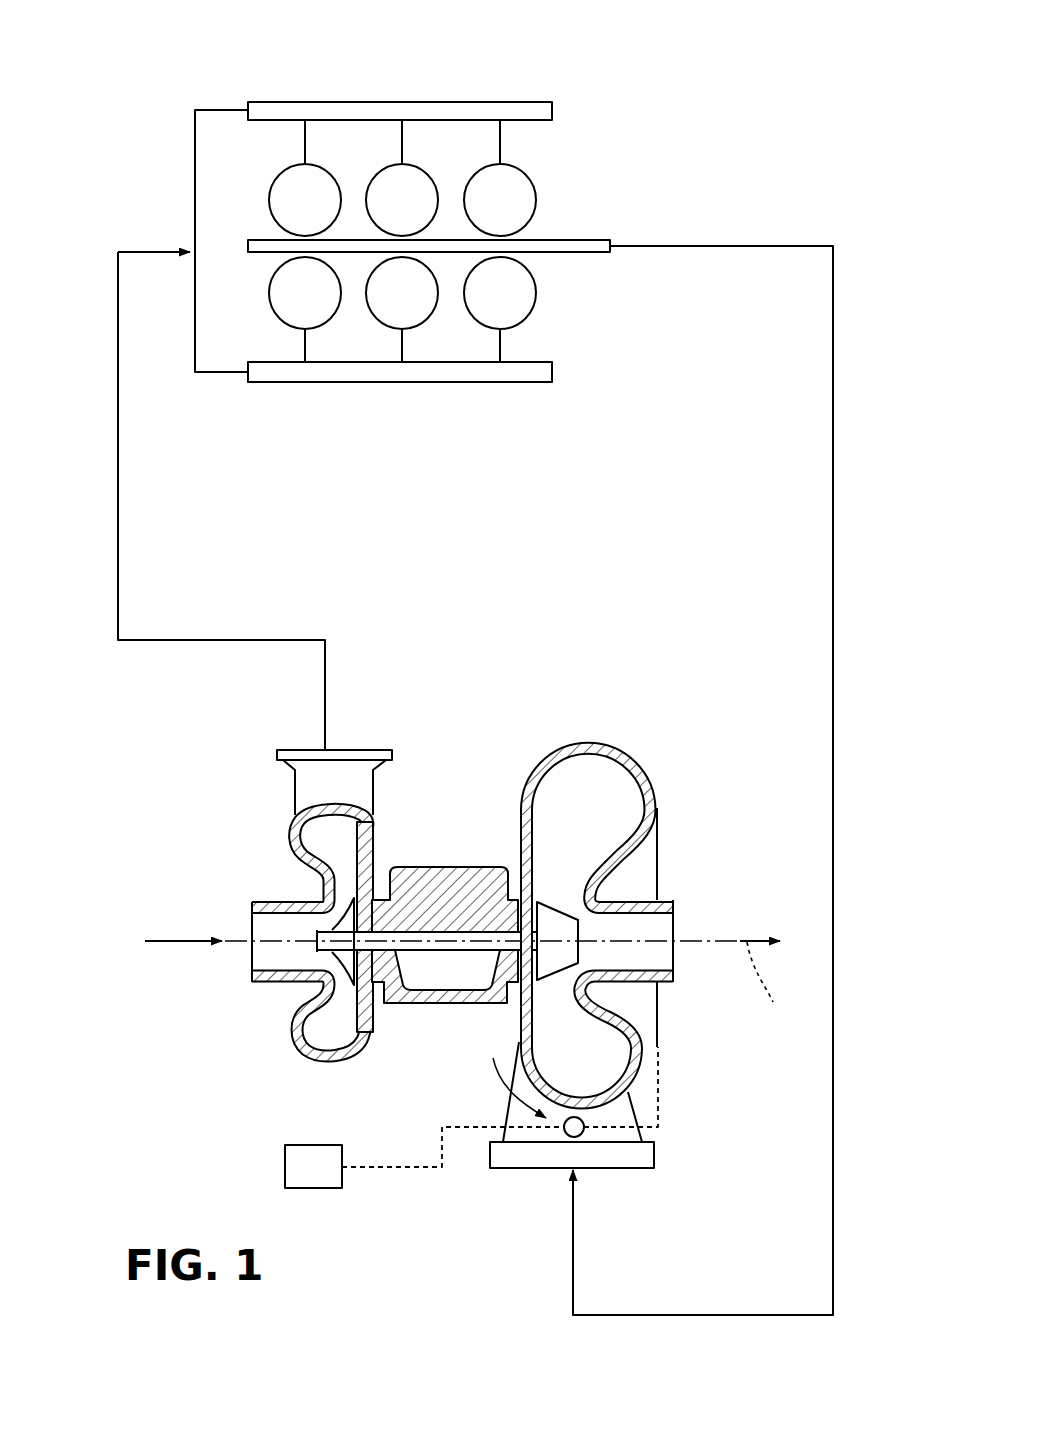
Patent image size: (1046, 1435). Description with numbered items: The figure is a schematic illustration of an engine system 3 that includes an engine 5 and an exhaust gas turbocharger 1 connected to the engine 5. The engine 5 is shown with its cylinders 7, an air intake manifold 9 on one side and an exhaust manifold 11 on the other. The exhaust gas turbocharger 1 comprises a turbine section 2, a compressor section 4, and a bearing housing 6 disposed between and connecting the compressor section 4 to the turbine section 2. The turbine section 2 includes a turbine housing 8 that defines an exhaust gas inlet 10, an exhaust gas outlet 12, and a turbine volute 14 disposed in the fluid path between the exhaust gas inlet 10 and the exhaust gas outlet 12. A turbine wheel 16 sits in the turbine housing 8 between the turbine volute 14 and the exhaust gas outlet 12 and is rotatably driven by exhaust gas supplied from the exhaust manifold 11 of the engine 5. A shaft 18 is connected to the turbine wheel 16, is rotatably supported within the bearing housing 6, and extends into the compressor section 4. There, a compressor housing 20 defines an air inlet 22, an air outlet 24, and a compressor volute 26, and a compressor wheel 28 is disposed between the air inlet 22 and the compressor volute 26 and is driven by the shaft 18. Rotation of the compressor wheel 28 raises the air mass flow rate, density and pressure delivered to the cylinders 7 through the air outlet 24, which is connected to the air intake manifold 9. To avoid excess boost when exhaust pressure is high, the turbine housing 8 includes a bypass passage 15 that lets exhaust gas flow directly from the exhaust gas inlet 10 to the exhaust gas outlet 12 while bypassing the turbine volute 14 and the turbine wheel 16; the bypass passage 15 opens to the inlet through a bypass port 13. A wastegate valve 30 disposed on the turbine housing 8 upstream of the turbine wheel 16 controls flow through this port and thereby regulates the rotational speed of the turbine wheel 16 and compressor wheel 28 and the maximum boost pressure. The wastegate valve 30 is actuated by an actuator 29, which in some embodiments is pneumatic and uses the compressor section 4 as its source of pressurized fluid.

The exhaust gas turbocharger 1 is at (632, 705).
The turbine section 2 is at (656, 750).
The engine system 3 is at (119, 49).
The compressor section 4 is at (238, 902).
The engine 5 is at (566, 182).
The bearing housing 6 is at (460, 890).
The cylinders 7 is at (331, 268).
The turbine housing 8 is at (645, 832).
The air intake manifold 9 is at (277, 110).
The exhaust gas inlet 10 is at (525, 1140).
The exhaust manifold 11 is at (372, 373).
The exhaust gas outlet 12 is at (664, 900).
The bypass port 13 is at (578, 1136).
The turbine volute 14 is at (570, 803).
The bypass passage 15 is at (658, 1095).
The turbine wheel 16 is at (565, 935).
The shaft 18 is at (440, 955).
The compressor housing 20 is at (283, 838).
The air inlet 22 is at (258, 990).
The air outlet 24 is at (362, 788).
The compressor volute 26 is at (337, 833).
The compressor wheel 28 is at (334, 952).
The actuator 29 is at (313, 1145).
The wastegate valve 30 is at (513, 1075).